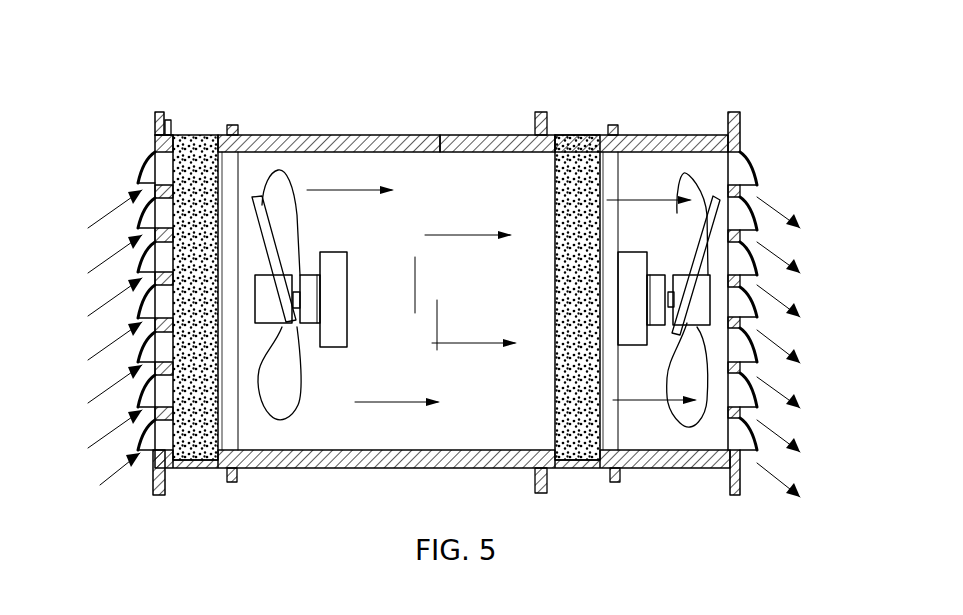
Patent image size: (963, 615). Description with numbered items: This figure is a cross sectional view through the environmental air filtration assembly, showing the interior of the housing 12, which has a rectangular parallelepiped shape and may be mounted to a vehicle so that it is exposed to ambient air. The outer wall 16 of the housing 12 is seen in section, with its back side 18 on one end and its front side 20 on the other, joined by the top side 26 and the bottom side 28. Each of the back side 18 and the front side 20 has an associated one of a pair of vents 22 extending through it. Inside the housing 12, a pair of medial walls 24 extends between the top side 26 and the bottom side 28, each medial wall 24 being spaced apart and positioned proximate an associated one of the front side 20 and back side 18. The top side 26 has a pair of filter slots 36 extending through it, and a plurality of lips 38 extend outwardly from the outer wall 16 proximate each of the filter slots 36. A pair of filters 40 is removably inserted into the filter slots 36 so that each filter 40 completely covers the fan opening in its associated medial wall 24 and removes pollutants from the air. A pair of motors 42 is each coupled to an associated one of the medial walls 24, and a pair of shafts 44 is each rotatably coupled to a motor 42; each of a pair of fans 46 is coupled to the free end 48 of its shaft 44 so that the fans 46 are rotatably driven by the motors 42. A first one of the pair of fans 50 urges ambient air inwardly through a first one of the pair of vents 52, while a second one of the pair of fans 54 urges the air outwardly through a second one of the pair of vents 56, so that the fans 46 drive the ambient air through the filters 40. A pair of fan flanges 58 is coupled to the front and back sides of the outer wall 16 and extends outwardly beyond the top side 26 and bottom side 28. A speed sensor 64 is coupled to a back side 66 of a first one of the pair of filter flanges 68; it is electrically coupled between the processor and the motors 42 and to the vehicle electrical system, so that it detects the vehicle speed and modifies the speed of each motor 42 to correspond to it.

The housing 12 is at (400, 114).
The outer wall 16 is at (667, 134).
The back side 18 is at (155, 147).
The front side 20 is at (740, 458).
The vents 22 is at (140, 220).
The medial walls 24 is at (238, 170).
The top side 26 is at (217, 126).
The bottom side 28 is at (402, 465).
The filter slots 36 is at (585, 122).
The lips 38 is at (232, 483).
The filters 40 is at (195, 461).
The motors 42 is at (330, 347).
The shafts 44 is at (292, 273).
The fans 46 is at (285, 413).
The free end 48 is at (300, 296).
The first one of the pair of fans 50 is at (263, 393).
The first one of the pair of vents 52 is at (143, 352).
The second one of the pair of fans 54 is at (688, 180).
The second one of the pair of vents 56 is at (753, 378).
The fan flanges 58 is at (155, 117).
The speed sensor 64 is at (172, 132).
The back side of filter flange 66 is at (169, 119).
The filter flanges 68 is at (155, 124).